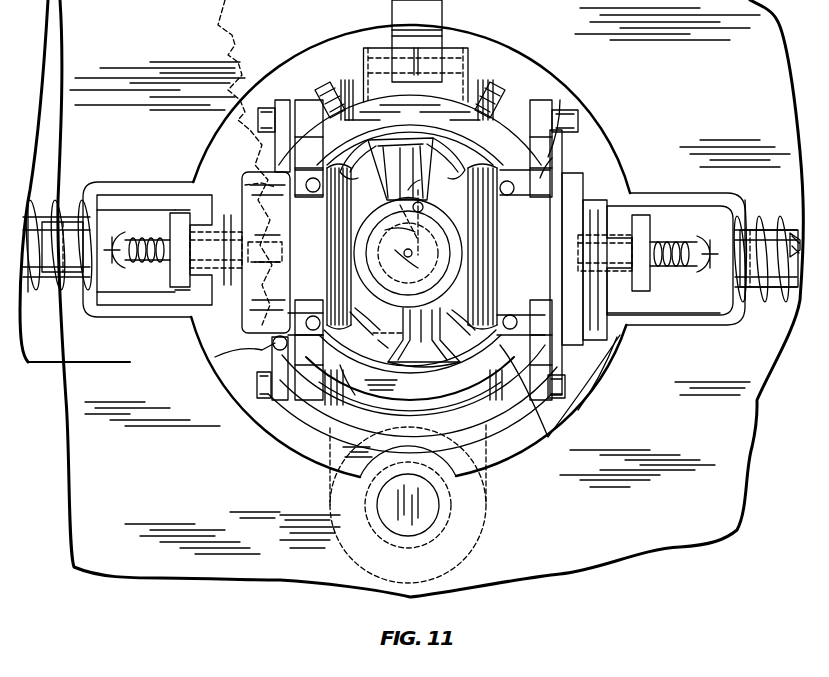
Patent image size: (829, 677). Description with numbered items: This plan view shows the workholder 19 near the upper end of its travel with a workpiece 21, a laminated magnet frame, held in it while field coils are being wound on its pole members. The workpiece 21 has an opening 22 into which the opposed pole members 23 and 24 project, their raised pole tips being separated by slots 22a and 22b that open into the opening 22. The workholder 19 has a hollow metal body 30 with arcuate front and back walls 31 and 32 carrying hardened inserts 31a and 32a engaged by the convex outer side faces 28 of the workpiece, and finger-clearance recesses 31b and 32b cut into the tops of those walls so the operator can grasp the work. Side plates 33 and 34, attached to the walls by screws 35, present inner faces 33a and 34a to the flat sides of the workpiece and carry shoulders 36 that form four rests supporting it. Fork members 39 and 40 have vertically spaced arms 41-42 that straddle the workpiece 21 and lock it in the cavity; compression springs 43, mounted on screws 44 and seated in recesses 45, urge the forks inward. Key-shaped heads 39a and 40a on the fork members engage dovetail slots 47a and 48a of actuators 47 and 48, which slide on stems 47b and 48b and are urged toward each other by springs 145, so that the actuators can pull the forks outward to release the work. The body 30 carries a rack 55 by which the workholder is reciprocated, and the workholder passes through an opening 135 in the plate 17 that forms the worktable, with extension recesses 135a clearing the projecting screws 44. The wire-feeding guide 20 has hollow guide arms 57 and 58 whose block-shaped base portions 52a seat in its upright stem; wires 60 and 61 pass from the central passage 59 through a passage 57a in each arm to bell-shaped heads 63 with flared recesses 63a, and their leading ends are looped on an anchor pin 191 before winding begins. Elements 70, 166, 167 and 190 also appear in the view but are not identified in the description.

The plate 17 is at (738, 402).
The workholder 19 is at (292, 70).
The wire-feeding guide 20 is at (462, 250).
The workpiece 21 is at (430, 108).
The opening 22 is at (405, 209).
The slot 22a is at (437, 160).
The slot 22b is at (380, 347).
The pole member 23 is at (433, 168).
The pole member 24 is at (362, 210).
The convexly curved outer side face 28 is at (548, 125).
The hollow metal body 30 is at (315, 80).
The front wall 31 is at (510, 400).
The arcuate insert 31a is at (420, 398).
The recess 31b is at (345, 431).
The back wall 32 is at (535, 110).
The arcuate insert 32a is at (333, 88).
The recess 32b is at (522, 105).
The side plate 33 is at (567, 178).
The inner face 33a is at (564, 262).
The side plate 34 is at (247, 187).
The inner face 34a is at (243, 213).
The screw 35 is at (570, 118).
The shoulder 36 is at (325, 127).
The fork member 39 is at (592, 202).
The head 39a is at (643, 215).
The fork member 40 is at (200, 318).
The head 40a is at (173, 213).
The arms 41-42 is at (268, 180).
The compression spring 43 is at (140, 262).
The screw 44 is at (85, 320).
The recess 45 is at (190, 285).
The actuator 47 is at (707, 212).
The dovetail slot 47a is at (650, 230).
The stem portion 47b is at (766, 228).
The actuator 48 is at (117, 200).
The dovetail slot 48a is at (180, 283).
The stem portion 48b is at (73, 205).
The base portion 52a is at (433, 323).
The rack 55 is at (448, 40).
The guide arm 57 is at (390, 353).
The passage 57a is at (403, 317).
The guide arm 58 is at (413, 180).
The central passage 59 is at (392, 260).
The wire 60 is at (470, 360).
The wire 61 is at (367, 160).
The bell-shaped head 63 is at (450, 350).
The flared recess 63a is at (368, 395).
The link 70 is at (260, 153).
The opening 135 is at (593, 373).
The extension recess 135a is at (690, 315).
The compression spring 145 is at (37, 283).
The pivot 166 is at (432, 190).
The hub 167 is at (388, 240).
The core 190 is at (552, 158).
The anchor pin 191 is at (215, 356).